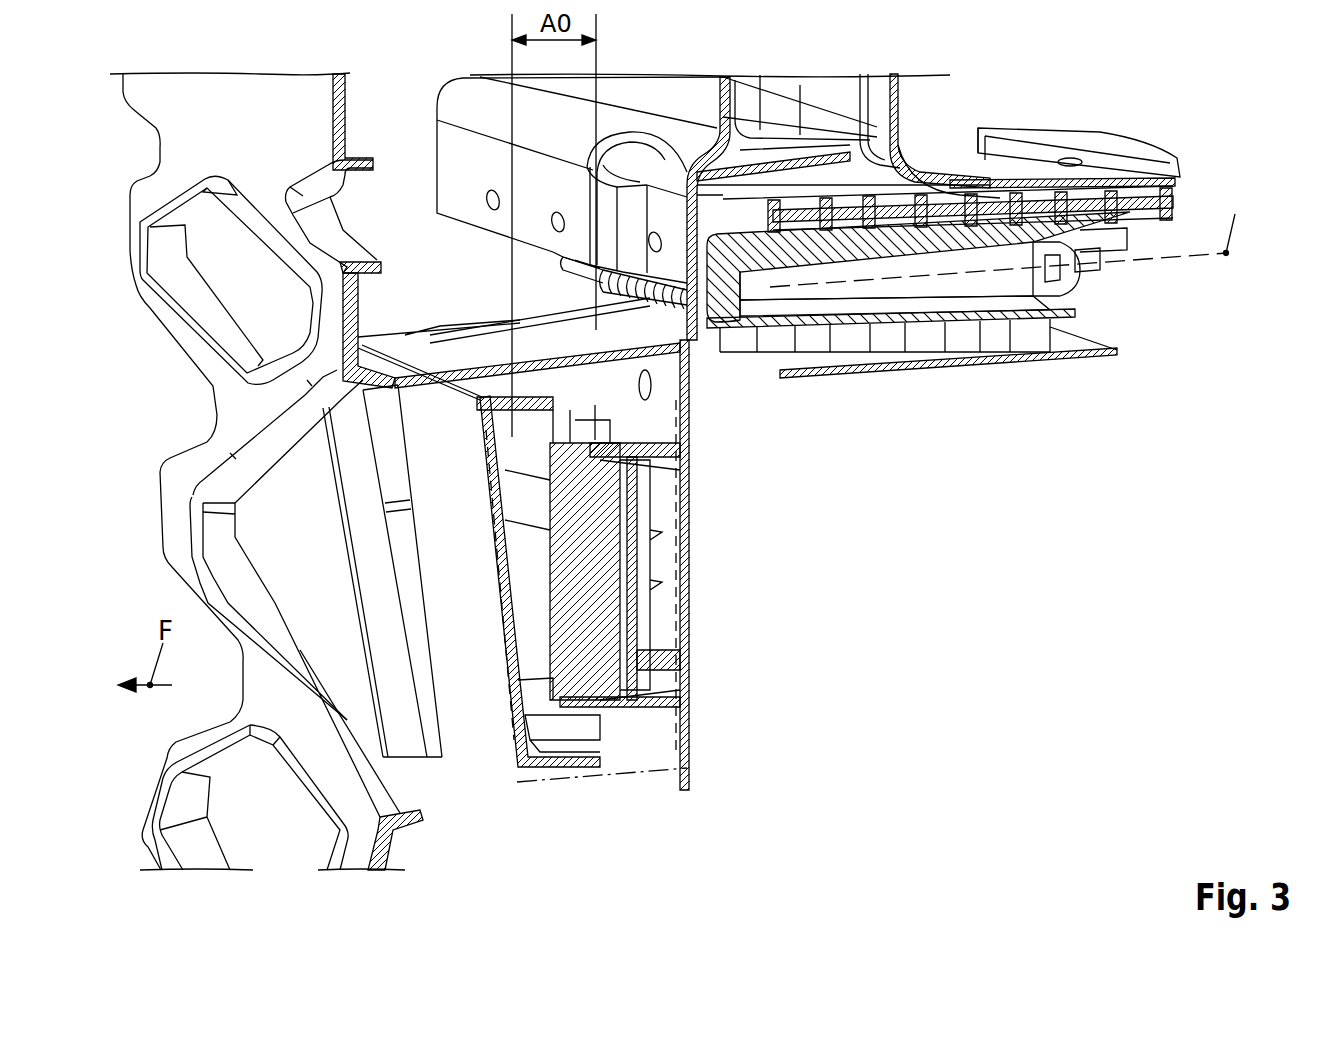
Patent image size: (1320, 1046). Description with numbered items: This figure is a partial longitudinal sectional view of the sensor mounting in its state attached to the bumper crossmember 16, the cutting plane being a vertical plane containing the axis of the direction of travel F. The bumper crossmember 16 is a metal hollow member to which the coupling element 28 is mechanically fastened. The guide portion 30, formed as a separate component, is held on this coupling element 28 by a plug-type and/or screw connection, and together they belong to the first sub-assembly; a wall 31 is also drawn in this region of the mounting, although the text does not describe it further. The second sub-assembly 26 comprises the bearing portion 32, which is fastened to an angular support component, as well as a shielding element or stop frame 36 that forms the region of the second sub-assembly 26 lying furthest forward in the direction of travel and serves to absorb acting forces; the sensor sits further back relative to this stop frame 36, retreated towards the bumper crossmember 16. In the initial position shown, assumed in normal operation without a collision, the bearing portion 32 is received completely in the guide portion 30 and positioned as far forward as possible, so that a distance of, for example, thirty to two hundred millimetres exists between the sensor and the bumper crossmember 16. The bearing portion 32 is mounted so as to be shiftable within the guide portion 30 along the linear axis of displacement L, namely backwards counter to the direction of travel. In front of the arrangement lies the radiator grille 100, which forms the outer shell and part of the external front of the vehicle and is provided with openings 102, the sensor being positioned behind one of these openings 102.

The bumper crossmember 16 is at (684, 90).
The second sub-assembly 26 is at (1057, 382).
The coupling element 28 is at (920, 110).
The guide portion 30 is at (990, 207).
The wall 31 is at (712, 207).
The bearing portion 32 is at (955, 318).
The stop frame 36 is at (388, 345).
The radiator grille 100 is at (308, 153).
The openings 102 is at (295, 510).